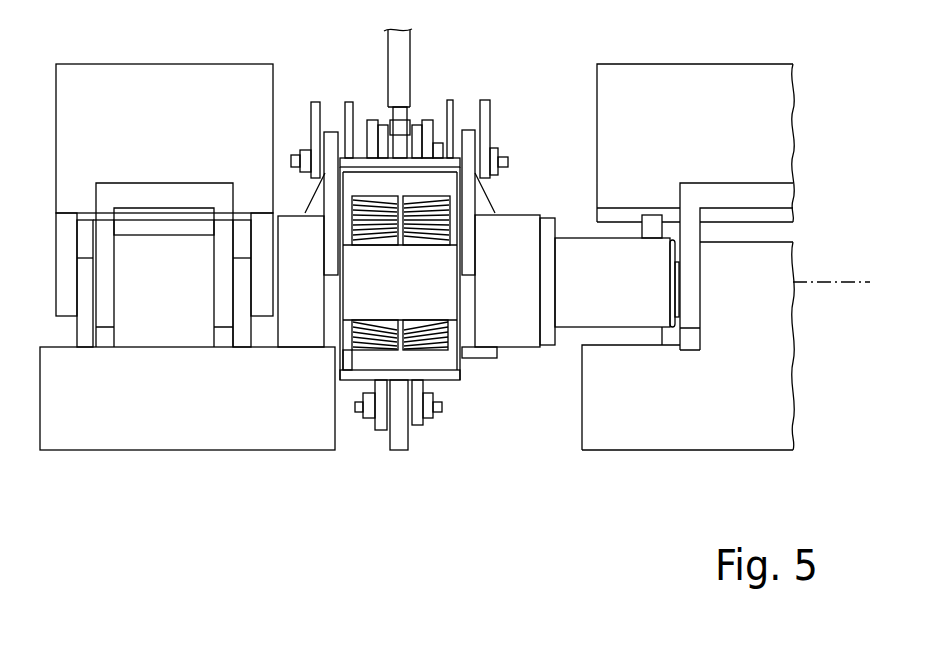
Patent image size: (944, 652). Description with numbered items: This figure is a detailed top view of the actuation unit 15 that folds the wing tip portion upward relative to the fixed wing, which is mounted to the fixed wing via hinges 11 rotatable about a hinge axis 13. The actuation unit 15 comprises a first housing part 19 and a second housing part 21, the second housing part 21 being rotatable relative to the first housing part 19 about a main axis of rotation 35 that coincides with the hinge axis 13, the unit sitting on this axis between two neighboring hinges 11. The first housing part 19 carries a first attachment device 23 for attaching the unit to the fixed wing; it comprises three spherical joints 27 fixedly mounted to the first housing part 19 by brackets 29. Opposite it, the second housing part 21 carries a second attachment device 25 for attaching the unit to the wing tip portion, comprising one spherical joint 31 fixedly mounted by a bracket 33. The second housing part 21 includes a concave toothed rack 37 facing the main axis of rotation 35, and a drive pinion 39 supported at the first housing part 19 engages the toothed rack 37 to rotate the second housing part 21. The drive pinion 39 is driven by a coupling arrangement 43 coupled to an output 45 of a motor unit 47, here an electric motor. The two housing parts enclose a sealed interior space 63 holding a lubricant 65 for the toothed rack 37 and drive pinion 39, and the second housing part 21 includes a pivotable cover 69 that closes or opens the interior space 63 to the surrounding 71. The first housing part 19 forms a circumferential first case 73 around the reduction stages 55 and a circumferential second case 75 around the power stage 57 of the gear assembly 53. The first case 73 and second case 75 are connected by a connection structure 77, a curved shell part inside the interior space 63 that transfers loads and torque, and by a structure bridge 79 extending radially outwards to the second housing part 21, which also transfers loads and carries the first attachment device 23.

The hinges 11 is at (185, 428).
The hinge axis 13 is at (834, 326).
The main axis of rotation 35 is at (832, 282).
The actuation unit 15 is at (400, 462).
The first housing part 19 is at (483, 225).
The second housing part 21 is at (438, 362).
The first attachment device 23 is at (317, 100).
The second attachment device 25 is at (395, 430).
The spherical joints 27 is at (333, 133).
The brackets 29 is at (315, 123).
The spherical joint 31 is at (413, 407).
The bracket 33 is at (417, 430).
The toothed rack 37 is at (368, 228).
The drive pinion 39 is at (433, 343).
The coupling arrangement 43 is at (554, 190).
The output 45 is at (548, 358).
The motor unit 47 is at (617, 282).
The gear assembly 53 is at (507, 260).
The reduction stages 55 is at (507, 260).
The power stage 57 is at (301, 260).
The interior space 63 is at (397, 268).
The lubricant 65 is at (397, 268).
The cover 69 is at (360, 350).
The surrounding 71 is at (510, 438).
The first case 73 is at (520, 332).
The second case 75 is at (301, 260).
The connection structure 77 is at (397, 300).
The structure bridge 79 is at (355, 160).